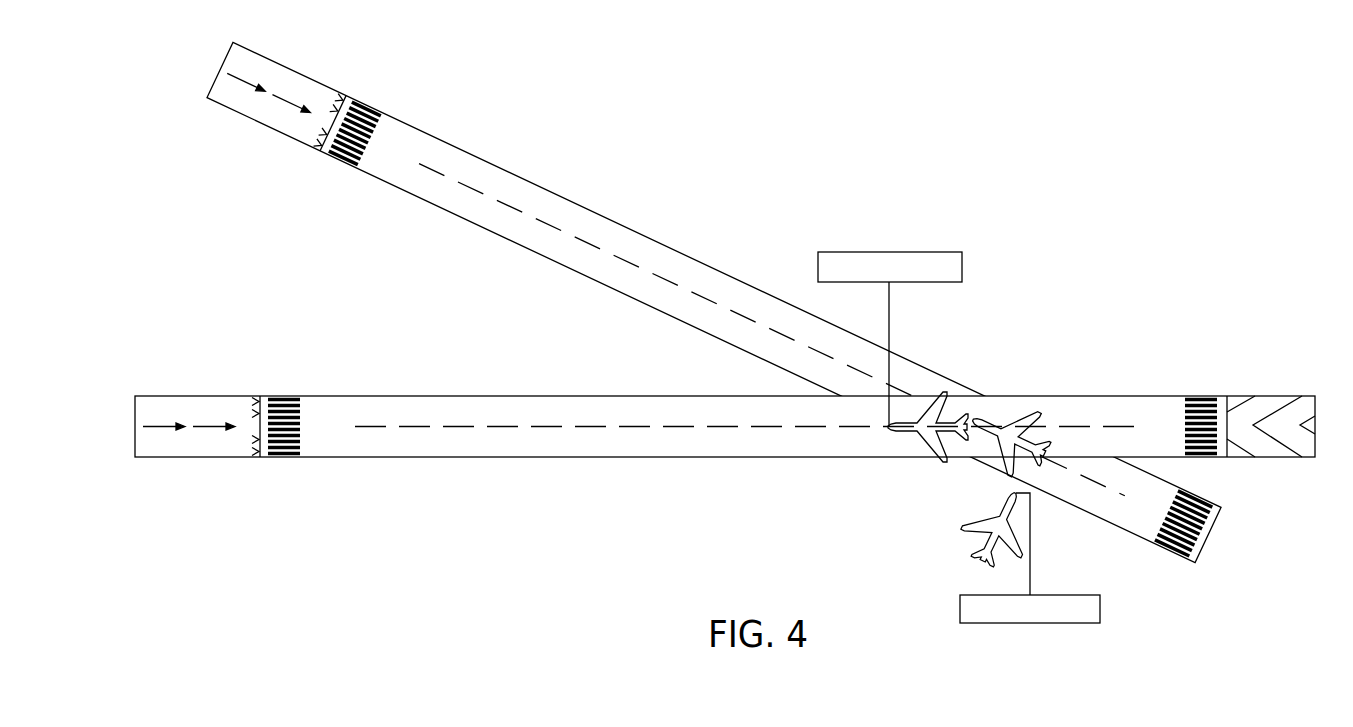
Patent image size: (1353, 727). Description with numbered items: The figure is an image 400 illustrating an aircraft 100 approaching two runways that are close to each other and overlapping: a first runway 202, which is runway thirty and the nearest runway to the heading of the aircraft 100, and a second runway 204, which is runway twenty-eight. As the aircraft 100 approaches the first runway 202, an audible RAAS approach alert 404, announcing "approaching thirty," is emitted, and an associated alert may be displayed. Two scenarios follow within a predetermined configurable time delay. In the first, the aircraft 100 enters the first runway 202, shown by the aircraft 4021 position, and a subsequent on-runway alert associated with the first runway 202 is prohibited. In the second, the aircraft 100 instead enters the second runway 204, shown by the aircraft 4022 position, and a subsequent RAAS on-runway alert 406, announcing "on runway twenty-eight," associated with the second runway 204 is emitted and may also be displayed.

The image 400 is at (725, 332).
The on runway alert 406 is at (889, 252).
The RAAS approach alert 404 is at (1100, 610).
The aircraft position 4021 is at (1038, 413).
The aircraft position 4022 is at (904, 434).
The aircraft 100 is at (958, 521).
The second runway 204 is at (1246, 396).
The first runway 202 is at (1211, 537).